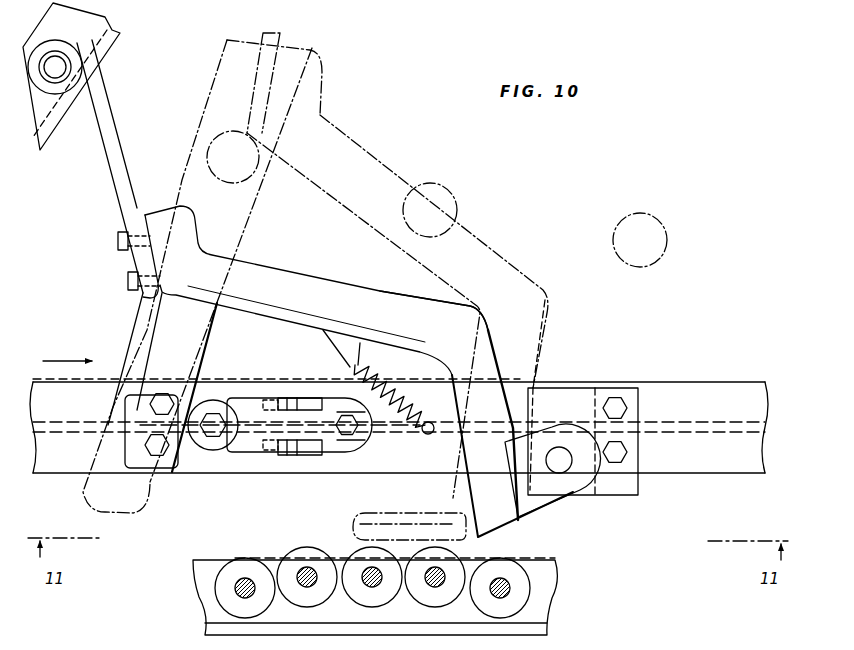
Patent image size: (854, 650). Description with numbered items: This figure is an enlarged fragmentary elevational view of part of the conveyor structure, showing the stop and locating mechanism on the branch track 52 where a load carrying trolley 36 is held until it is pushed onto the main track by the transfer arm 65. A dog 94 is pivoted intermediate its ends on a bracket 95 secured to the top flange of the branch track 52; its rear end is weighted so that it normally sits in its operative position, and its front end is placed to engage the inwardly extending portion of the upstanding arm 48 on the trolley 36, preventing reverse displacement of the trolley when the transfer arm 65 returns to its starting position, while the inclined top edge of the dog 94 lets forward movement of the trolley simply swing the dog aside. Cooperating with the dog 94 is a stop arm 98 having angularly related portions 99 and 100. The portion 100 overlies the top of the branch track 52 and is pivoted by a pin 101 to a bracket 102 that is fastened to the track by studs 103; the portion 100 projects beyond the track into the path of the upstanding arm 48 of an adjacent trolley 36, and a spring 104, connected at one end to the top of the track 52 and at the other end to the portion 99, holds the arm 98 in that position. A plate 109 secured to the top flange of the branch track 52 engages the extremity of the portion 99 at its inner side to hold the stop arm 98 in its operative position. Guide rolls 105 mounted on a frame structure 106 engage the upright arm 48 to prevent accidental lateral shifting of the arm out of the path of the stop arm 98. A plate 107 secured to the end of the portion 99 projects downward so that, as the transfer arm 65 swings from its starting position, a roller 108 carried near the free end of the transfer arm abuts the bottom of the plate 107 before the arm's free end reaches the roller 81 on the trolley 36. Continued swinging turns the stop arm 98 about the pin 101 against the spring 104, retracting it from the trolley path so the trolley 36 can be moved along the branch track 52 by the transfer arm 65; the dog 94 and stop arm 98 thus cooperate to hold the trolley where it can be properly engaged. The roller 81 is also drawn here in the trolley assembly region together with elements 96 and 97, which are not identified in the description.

The load carrying trolley 36 is at (410, 535).
The upstanding arm 48 is at (383, 520).
The branch track 52 is at (703, 395).
The transfer arm 65 is at (110, 61).
The roller 81 is at (205, 462).
The dog 94 is at (261, 395).
The bracket 95 is at (305, 453).
The slide bracket 96 is at (247, 450).
The adjusting bolt 97 is at (362, 437).
The stop arm 98 is at (325, 276).
The portion of stop arm 99 is at (402, 308).
The portion of stop arm 100 is at (492, 372).
The pin 101 is at (562, 470).
The bracket 102 is at (608, 388).
The studs 103 is at (620, 408).
The spring 104 is at (400, 387).
The guide rolls 105 is at (452, 570).
The frame structure 106 is at (535, 612).
The plate 107 is at (122, 150).
The roller 108 is at (54, 50).
The plate 109 is at (183, 362).